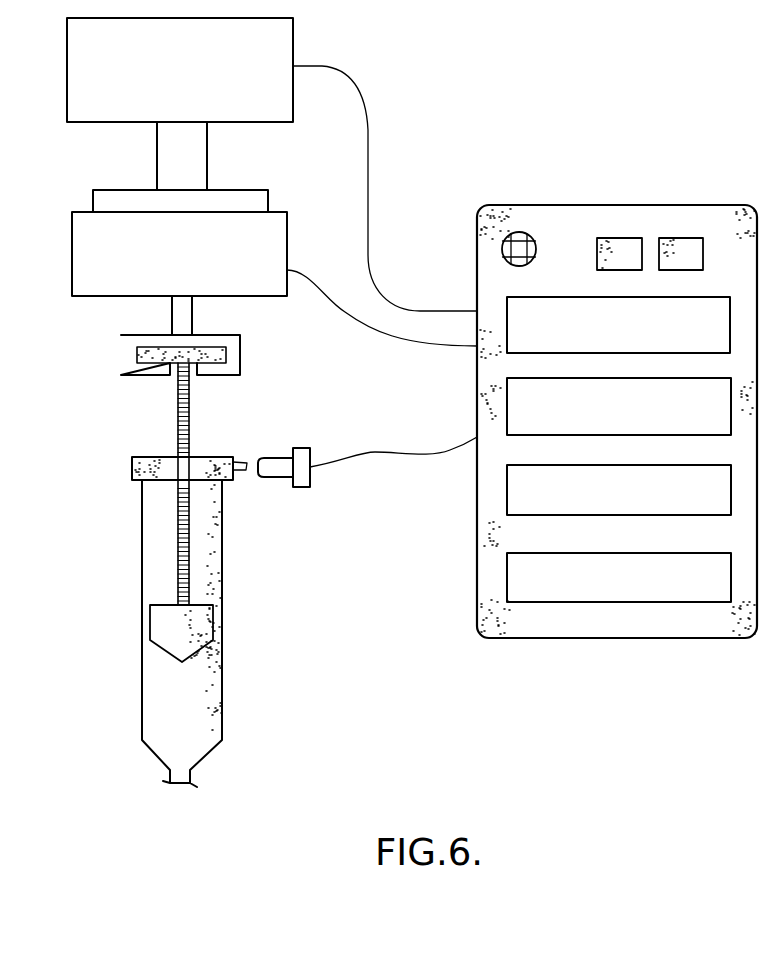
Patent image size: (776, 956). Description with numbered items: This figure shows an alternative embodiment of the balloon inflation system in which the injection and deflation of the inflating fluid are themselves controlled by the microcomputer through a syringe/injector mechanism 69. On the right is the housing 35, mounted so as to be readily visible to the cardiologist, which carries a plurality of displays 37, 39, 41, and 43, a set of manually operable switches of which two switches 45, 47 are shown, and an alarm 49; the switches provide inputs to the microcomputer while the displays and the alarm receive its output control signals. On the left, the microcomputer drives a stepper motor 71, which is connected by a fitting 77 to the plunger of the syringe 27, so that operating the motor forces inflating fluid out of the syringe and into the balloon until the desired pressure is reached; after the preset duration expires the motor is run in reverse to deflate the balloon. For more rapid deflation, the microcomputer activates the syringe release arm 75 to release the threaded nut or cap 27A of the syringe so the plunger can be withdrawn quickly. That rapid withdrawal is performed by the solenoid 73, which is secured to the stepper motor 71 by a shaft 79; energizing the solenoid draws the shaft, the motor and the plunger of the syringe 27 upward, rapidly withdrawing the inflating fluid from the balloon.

The solenoid 73 is at (293, 46).
The shaft 79 is at (207, 160).
The stepper motor 71 is at (287, 246).
The fitting 77 is at (240, 357).
The syringe/injector mechanism 69 is at (131, 424).
The threaded nut or cap 27A is at (208, 457).
The syringe release arm 75 is at (300, 487).
The syringe 27 is at (222, 684).
The housing 35 is at (477, 583).
The alarm 49 is at (529, 235).
The manually operable switch 45 is at (597, 253).
The manually operable switch 47 is at (703, 256).
The display 37 is at (664, 297).
The display 39 is at (632, 378).
The display 41 is at (622, 465).
The display 43 is at (634, 553).